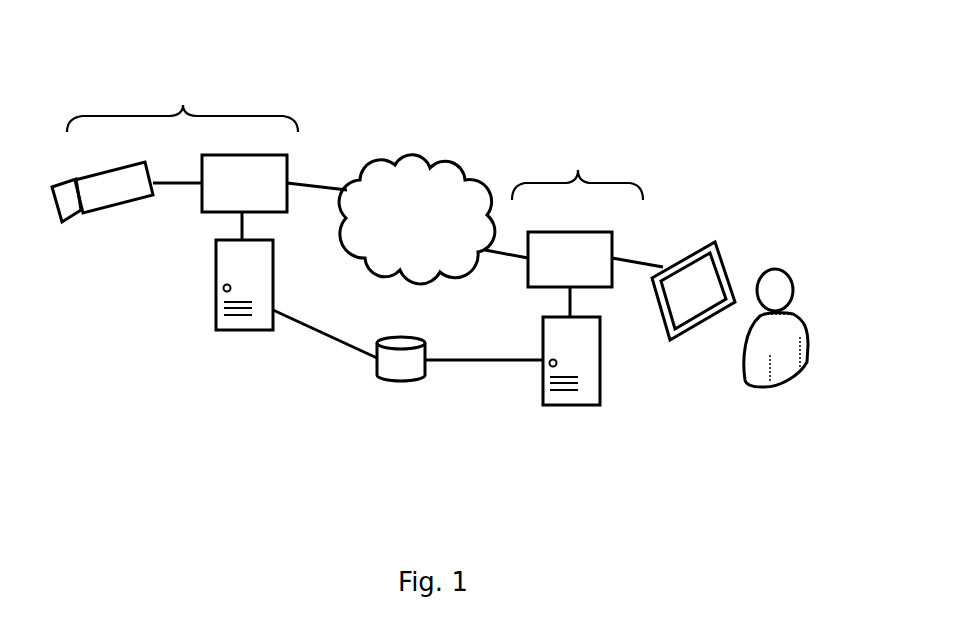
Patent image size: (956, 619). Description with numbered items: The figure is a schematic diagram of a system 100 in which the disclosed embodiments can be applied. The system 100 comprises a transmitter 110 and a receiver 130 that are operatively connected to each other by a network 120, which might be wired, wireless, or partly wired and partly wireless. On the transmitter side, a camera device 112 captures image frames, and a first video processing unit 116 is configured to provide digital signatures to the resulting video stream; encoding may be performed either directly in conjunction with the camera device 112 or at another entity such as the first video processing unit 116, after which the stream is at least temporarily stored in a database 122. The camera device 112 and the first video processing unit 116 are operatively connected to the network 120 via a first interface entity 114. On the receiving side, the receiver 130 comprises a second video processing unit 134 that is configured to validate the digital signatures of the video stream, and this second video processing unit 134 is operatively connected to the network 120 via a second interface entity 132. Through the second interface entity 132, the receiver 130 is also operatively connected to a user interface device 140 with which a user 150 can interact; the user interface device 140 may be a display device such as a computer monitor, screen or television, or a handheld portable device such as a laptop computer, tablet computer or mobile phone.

The system 100 is at (258, 49).
The transmitter 110 is at (182, 102).
The camera device 112 is at (113, 188).
The first interface entity 114 is at (244, 183).
The first video processing unit 116 is at (242, 325).
The network 120 is at (417, 219).
The database 122 is at (393, 383).
The receiver 130 is at (577, 169).
The second interface entity 132 is at (570, 259).
The second video processing unit 134 is at (567, 400).
The user interface device 140 is at (700, 332).
The user 150 is at (775, 268).